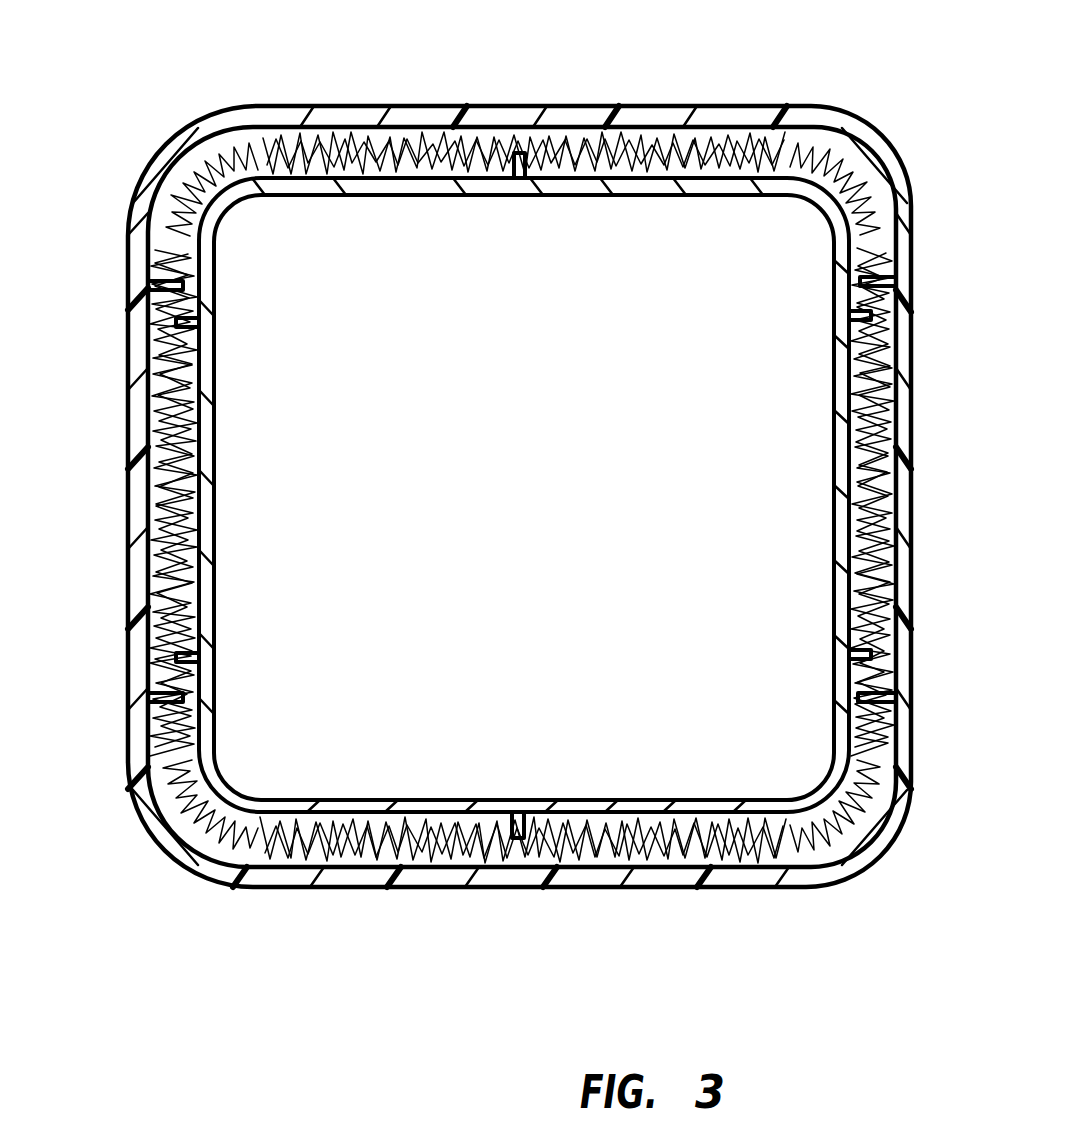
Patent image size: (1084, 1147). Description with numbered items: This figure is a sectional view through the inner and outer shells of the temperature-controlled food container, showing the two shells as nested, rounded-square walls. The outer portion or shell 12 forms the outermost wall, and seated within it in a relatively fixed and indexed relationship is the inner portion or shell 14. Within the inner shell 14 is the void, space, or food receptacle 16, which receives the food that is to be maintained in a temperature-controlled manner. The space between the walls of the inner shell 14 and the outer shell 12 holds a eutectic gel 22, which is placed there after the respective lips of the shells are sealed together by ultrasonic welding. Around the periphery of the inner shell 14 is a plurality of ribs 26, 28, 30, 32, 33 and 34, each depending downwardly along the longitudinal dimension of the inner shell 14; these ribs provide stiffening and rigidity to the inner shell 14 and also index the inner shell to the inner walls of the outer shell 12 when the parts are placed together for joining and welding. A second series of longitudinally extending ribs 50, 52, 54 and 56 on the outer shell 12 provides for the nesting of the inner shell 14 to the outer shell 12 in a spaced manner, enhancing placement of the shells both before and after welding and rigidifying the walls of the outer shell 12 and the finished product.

The outer shell 12 is at (341, 104).
The inner shell 14 is at (215, 525).
The food receptacle 16 is at (510, 527).
The eutectic gel 22 is at (670, 160).
The rib 26 is at (513, 178).
The rib 28 is at (190, 328).
The rib 30 is at (188, 662).
The rib 32 is at (512, 818).
The rib 33 is at (850, 660).
The rib 34 is at (852, 326).
The longitudinally extending rib 50 is at (165, 284).
The longitudinally extending rib 52 is at (166, 708).
The longitudinally extending rib 54 is at (878, 278).
The longitudinally extending rib 56 is at (868, 706).